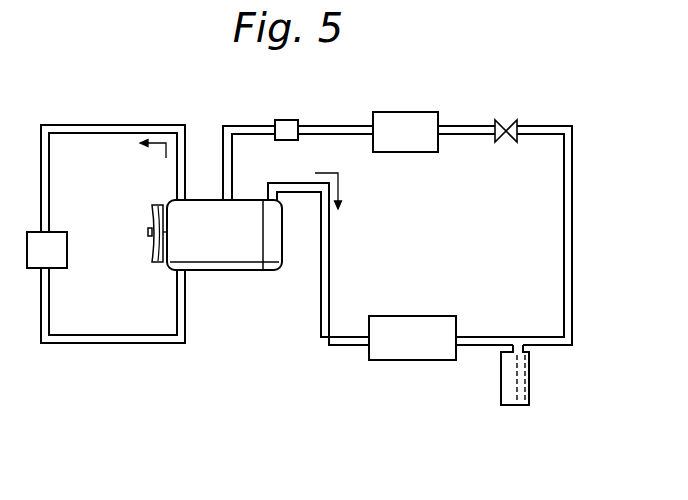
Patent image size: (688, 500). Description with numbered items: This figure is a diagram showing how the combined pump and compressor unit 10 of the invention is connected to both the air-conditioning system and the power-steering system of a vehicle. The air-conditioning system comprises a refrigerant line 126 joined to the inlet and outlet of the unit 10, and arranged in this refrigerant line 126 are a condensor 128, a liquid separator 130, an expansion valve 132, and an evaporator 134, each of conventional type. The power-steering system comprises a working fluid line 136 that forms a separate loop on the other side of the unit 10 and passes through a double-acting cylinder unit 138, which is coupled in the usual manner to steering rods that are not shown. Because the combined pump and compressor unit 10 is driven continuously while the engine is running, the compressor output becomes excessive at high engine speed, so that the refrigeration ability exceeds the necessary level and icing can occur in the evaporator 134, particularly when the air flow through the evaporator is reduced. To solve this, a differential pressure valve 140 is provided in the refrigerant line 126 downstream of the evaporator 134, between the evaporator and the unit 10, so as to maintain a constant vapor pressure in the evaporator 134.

The combined pump and compressor unit 10 is at (218, 266).
The refrigerant line 126 is at (329, 261).
The condensor 128 is at (406, 360).
The liquid separator 130 is at (508, 405).
The expansion valve 132 is at (508, 122).
The evaporator 134 is at (419, 112).
The working fluid line 136 is at (131, 343).
The double-acting cylinder unit 138 is at (62, 266).
The differential pressure valve 140 is at (297, 120).